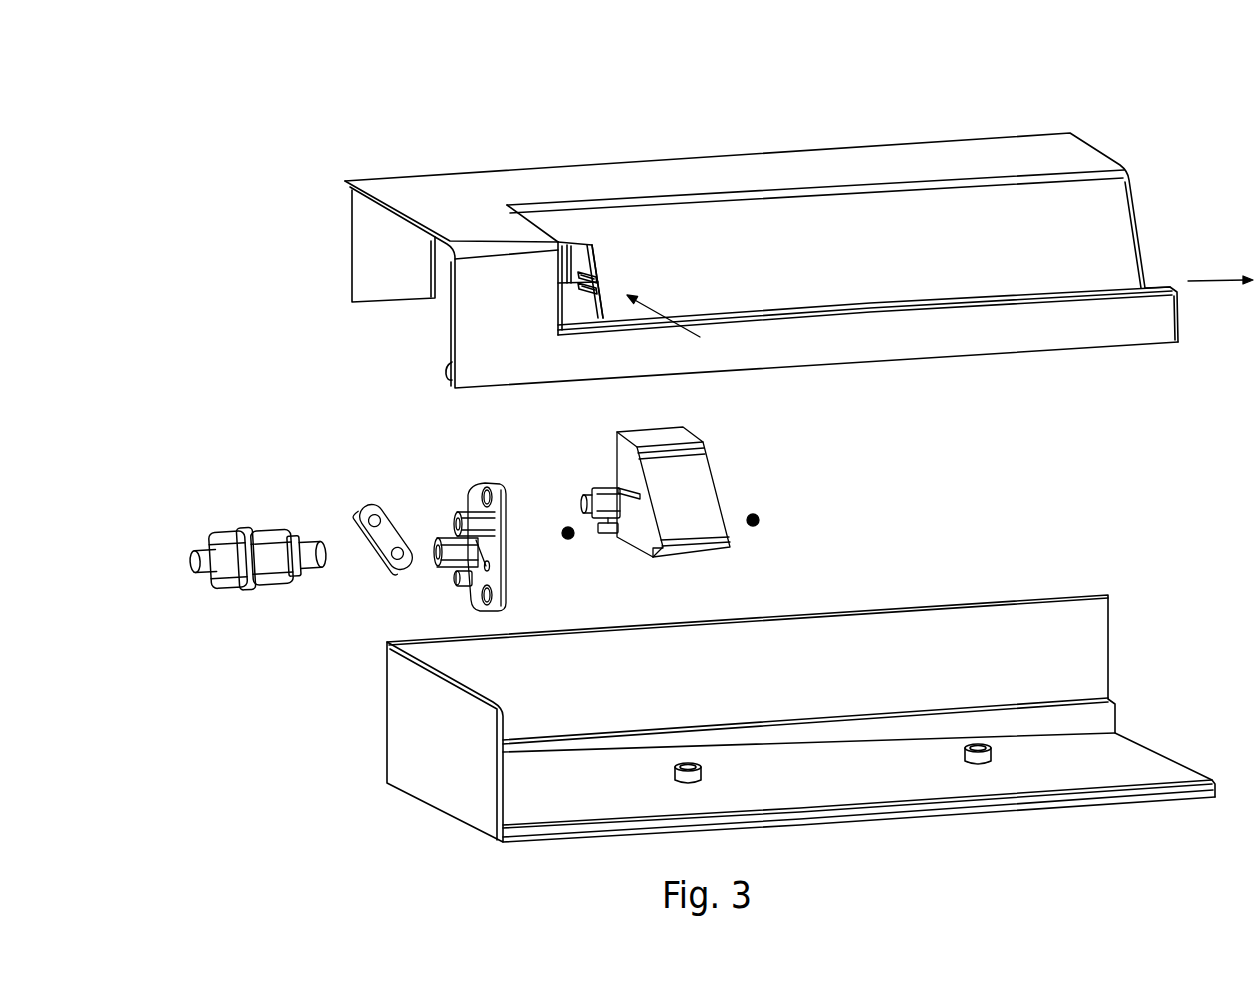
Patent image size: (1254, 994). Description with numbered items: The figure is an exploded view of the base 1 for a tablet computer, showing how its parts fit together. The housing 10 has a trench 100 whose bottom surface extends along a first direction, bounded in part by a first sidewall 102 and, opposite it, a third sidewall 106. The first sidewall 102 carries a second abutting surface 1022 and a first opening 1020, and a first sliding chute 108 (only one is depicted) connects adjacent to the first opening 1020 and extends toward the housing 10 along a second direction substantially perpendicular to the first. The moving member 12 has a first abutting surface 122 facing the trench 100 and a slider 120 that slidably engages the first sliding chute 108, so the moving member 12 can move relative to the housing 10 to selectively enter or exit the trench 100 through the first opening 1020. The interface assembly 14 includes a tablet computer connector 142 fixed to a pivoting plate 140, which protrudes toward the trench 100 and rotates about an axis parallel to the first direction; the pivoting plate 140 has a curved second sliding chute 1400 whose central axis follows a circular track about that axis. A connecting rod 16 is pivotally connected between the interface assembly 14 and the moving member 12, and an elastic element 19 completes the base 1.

The base 1 is at (248, 75).
The housing 10 is at (884, 98).
The trench 100 is at (1134, 278).
The first sidewall 102 is at (782, 228).
The first opening 1020 is at (606, 302).
The second abutting surface 1022 is at (703, 230).
The third sidewall 106 is at (898, 338).
The first sliding chute 108 is at (594, 268).
The moving member 12 is at (690, 450).
The slider 120 is at (628, 489).
The first abutting surface 122 is at (695, 485).
The interface assembly 14 is at (377, 668).
The pivoting plate 140 is at (475, 590).
The second sliding chute 1400 is at (486, 484).
The tablet computer connector 142 is at (230, 573).
The connecting rod 16 is at (372, 505).
The elastic element 19 is at (568, 527).